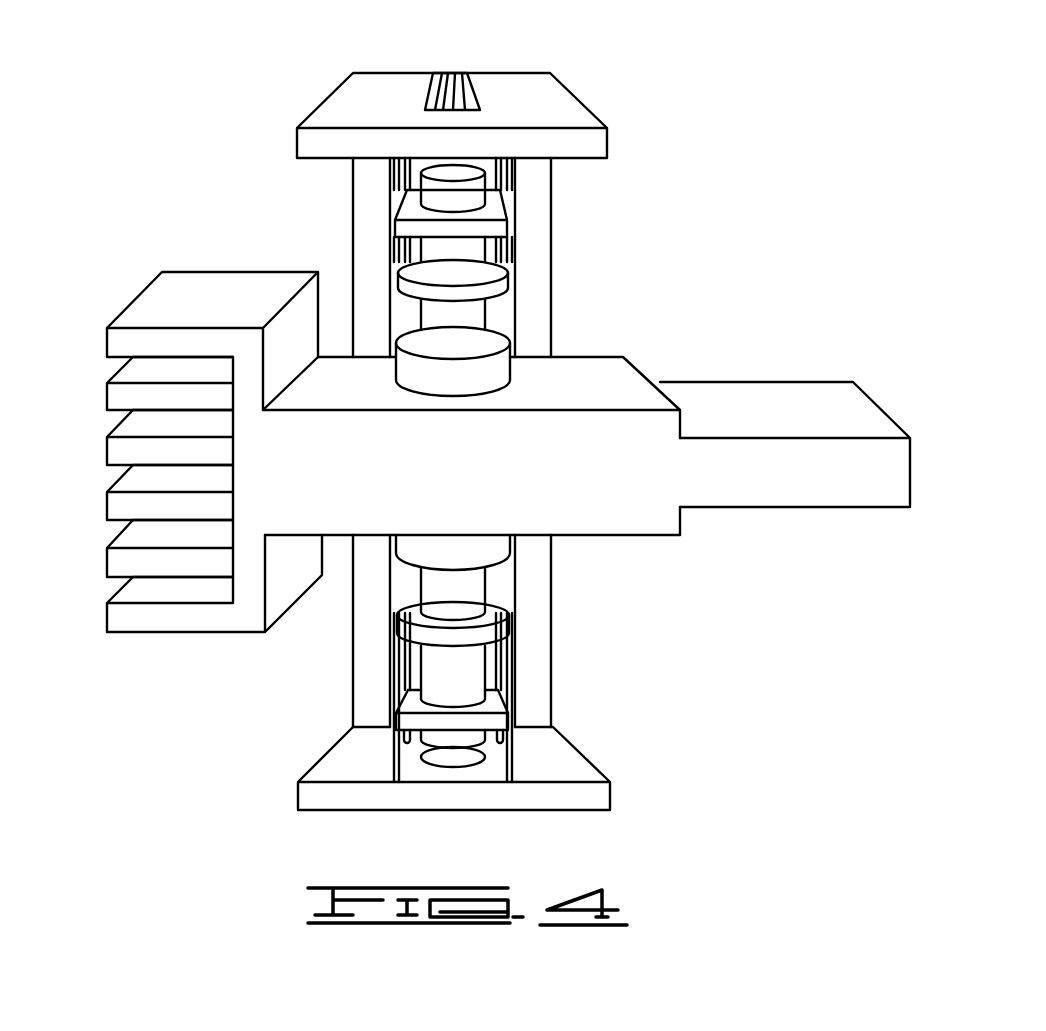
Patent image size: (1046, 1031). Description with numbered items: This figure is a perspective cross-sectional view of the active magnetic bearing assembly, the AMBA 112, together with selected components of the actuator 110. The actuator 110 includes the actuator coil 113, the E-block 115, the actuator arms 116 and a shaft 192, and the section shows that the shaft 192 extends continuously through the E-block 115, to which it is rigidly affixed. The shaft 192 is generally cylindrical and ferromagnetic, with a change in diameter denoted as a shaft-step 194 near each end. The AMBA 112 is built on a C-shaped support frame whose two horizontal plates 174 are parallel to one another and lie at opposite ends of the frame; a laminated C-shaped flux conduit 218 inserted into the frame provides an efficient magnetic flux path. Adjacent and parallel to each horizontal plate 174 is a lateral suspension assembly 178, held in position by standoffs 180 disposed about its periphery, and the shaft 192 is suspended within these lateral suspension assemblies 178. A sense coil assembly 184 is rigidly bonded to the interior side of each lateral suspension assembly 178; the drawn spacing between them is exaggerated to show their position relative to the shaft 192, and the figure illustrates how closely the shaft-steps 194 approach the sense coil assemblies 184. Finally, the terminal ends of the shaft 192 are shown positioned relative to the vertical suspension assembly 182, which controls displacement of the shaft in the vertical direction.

The actuator 110 is at (668, 549).
The active magnetic bearing assembly (AMBA) 112 is at (575, 222).
The actuator coil 113 is at (880, 487).
The E-block 115 is at (622, 435).
The actuator arms 116 is at (167, 592).
The horizontal plates 174 is at (523, 90).
The lateral suspension assemblies 178 is at (407, 228).
The standoffs 180 is at (517, 177).
The vertical suspension assembly 182 is at (448, 760).
The sense coil assemblies 184 is at (510, 285).
The shaft 192 is at (472, 326).
The shaft-step 194 is at (510, 346).
The flux conduit 218 is at (446, 74).